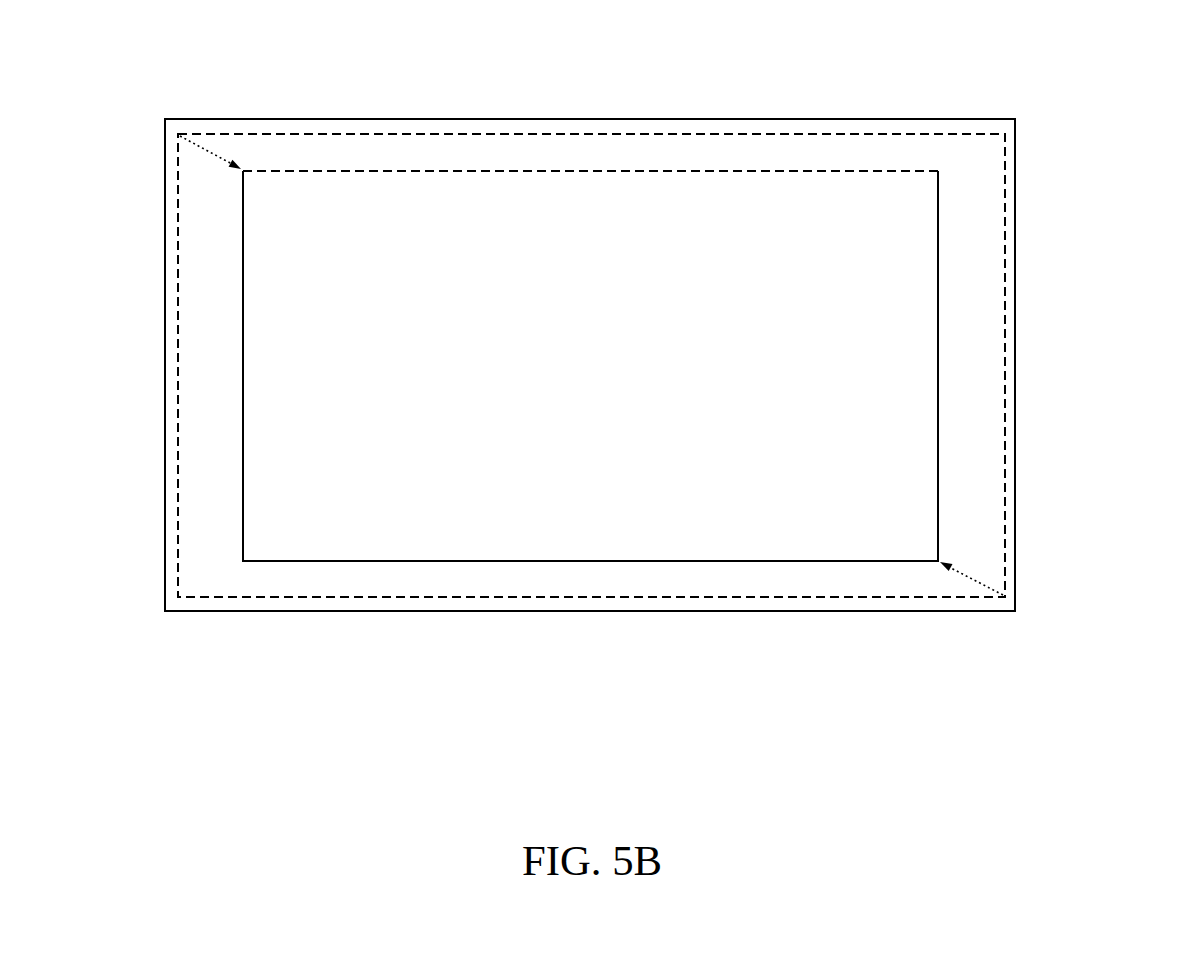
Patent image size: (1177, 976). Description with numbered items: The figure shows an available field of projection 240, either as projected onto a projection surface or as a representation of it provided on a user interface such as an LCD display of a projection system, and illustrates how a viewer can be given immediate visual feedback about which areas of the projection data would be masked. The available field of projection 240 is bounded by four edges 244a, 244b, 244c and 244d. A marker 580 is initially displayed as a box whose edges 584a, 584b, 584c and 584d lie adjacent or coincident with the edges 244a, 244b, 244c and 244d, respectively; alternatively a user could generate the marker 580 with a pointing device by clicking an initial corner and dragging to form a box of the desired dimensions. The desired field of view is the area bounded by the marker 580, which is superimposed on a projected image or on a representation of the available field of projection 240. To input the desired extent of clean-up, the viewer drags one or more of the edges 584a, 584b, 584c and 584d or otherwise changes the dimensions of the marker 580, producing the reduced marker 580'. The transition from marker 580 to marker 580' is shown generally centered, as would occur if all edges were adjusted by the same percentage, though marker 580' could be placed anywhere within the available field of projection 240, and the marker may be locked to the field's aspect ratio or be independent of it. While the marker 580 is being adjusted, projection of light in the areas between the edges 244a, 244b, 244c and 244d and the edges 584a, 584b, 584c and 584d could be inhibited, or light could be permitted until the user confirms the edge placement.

The available field of projection 240 is at (395, 633).
The edge of the available field of projection 244a is at (846, 120).
The edge of the available field of projection 244b is at (705, 613).
The edge of the available field of projection 244c is at (163, 287).
The edge of the available field of projection 244d is at (1017, 261).
The marker 580 is at (591, 329).
The marker 580' is at (590, 366).
The edge of the marker 584a is at (395, 172).
The edge of the marker 584b is at (320, 559).
The edge of the marker 584c is at (243, 292).
The edge of the marker 584d is at (938, 307).